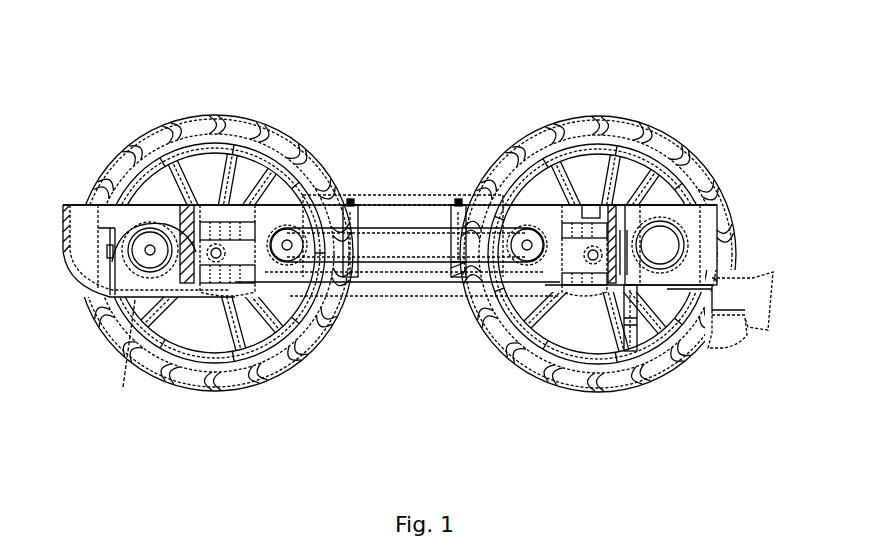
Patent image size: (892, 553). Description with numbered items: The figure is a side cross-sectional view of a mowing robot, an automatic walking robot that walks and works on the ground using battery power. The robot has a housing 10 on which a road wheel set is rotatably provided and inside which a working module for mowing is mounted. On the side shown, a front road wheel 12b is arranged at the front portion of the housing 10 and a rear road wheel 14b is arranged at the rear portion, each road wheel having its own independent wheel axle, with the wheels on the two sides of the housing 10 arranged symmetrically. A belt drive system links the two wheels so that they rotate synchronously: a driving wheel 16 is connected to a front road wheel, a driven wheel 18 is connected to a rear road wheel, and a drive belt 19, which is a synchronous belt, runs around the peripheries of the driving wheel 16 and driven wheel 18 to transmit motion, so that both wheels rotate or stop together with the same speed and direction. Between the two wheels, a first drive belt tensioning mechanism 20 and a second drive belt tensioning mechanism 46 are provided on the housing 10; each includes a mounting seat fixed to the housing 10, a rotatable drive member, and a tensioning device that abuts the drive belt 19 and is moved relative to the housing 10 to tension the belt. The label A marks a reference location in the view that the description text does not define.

The housing 10 is at (416, 215).
The front road wheel 12b is at (673, 370).
The rear road wheel 14b is at (183, 390).
The driving wheel 16 is at (263, 283).
The driven wheel 18 is at (580, 197).
The drive belt 19 is at (398, 265).
The first drive belt tensioning mechanism 20 is at (355, 197).
The second drive belt tensioning mechanism 46 is at (458, 193).
The axis A is at (412, 205).